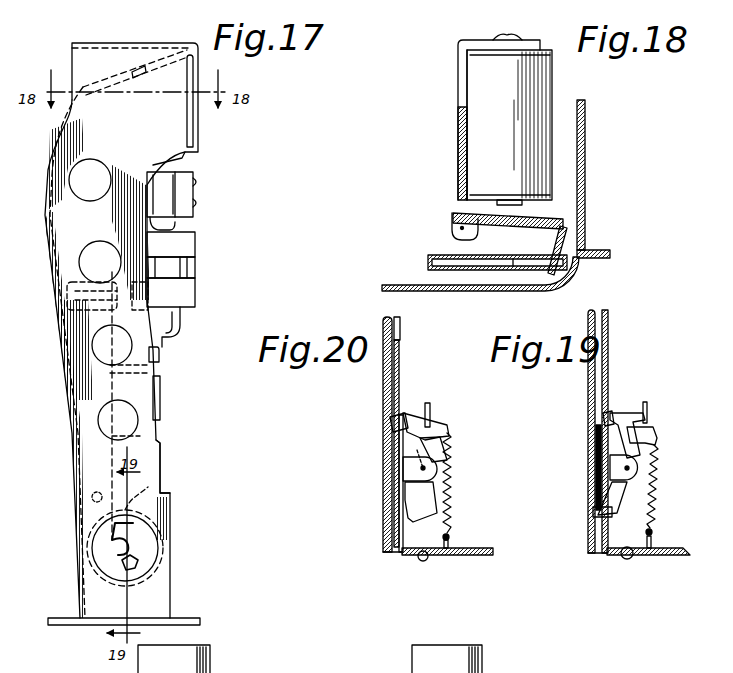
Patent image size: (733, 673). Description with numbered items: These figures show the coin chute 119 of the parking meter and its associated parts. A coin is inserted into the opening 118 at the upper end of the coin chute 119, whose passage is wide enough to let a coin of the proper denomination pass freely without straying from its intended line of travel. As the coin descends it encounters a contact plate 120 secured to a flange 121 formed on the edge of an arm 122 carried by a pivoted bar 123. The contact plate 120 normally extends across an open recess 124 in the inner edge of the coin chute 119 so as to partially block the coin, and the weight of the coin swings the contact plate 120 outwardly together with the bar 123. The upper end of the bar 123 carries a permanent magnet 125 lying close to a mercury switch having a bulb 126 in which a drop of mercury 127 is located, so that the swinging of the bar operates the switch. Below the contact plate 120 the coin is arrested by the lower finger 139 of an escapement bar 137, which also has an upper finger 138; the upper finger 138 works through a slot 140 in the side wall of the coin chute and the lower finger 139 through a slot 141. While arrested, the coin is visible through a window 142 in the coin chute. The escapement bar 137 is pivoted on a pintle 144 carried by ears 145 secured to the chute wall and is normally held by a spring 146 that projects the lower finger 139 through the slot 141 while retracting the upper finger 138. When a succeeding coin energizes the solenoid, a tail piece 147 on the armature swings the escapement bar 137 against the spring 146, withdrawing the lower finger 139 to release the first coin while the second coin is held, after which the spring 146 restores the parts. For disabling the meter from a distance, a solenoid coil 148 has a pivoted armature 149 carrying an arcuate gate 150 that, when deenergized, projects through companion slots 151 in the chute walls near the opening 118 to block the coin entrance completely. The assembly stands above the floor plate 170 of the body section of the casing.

In FIG. 17, the opening 118 is at (195, 125).
In FIG. 18, the opening 118 is at (583, 263).
In FIG. 17, the coin chute 119 is at (88, 227).
In FIG. 18, the coin chute 119 is at (428, 263).
In FIG. 20, the coin chute 119 is at (387, 387).
In FIG. 19, the coin chute 119 is at (608, 358).
In FIG. 17, the contact plate 120 is at (158, 433).
In FIG. 17, the flange 121 is at (162, 383).
In FIG. 17, the arm 122 is at (158, 362).
In FIG. 17, the pivoted bar 123 is at (80, 400).
In FIG. 17, the open recess 124 is at (150, 468).
In FIG. 17, the permanent magnet 125 is at (72, 300).
In FIG. 17, the bulb 126 is at (180, 312).
In FIG. 17, the drop of mercury 127 is at (173, 328).
In FIG. 17, the escapement bar 137 is at (123, 493).
In FIG. 20, the escapement bar 137 is at (450, 442).
In FIG. 19, the escapement bar 137 is at (633, 432).
In FIG. 20, the upper finger 138 is at (413, 415).
In FIG. 19, the upper finger 138 is at (620, 413).
In FIG. 20, the lower finger 139 is at (415, 550).
In FIG. 19, the lower finger 139 is at (612, 513).
In FIG. 20, the slot 140 is at (407, 415).
In FIG. 19, the slot 140 is at (608, 413).
In FIG. 20, the slot 141 is at (402, 512).
In FIG. 19, the slot 141 is at (608, 515).
In FIG. 17, the window 142 is at (150, 543).
In FIG. 20, the window 142 is at (388, 480).
In FIG. 19, the window 142 is at (595, 473).
In FIG. 20, the pintle 144 is at (425, 468).
In FIG. 19, the pintle 144 is at (629, 467).
In FIG. 20, the ears 145 is at (435, 477).
In FIG. 19, the ears 145 is at (637, 473).
In FIG. 20, the spring 146 is at (448, 495).
In FIG. 19, the spring 146 is at (652, 503).
In FIG. 20, the tail piece 147 is at (435, 407).
In FIG. 19, the tail piece 147 is at (647, 407).
In FIG. 18, the solenoid coil 148 is at (547, 90).
In FIG. 18, the pivoted armature 149 is at (516, 222).
In FIG. 18, the arcuate gate 150 is at (587, 233).
In FIG. 17, the companion slots 151 is at (192, 143).
In FIG. 18, the companion slots 151 is at (556, 262).
In FIG. 17, the floor plate 170 is at (185, 617).
In FIG. 20, the floor plate 170 is at (470, 557).
In FIG. 19, the floor plate 170 is at (648, 551).